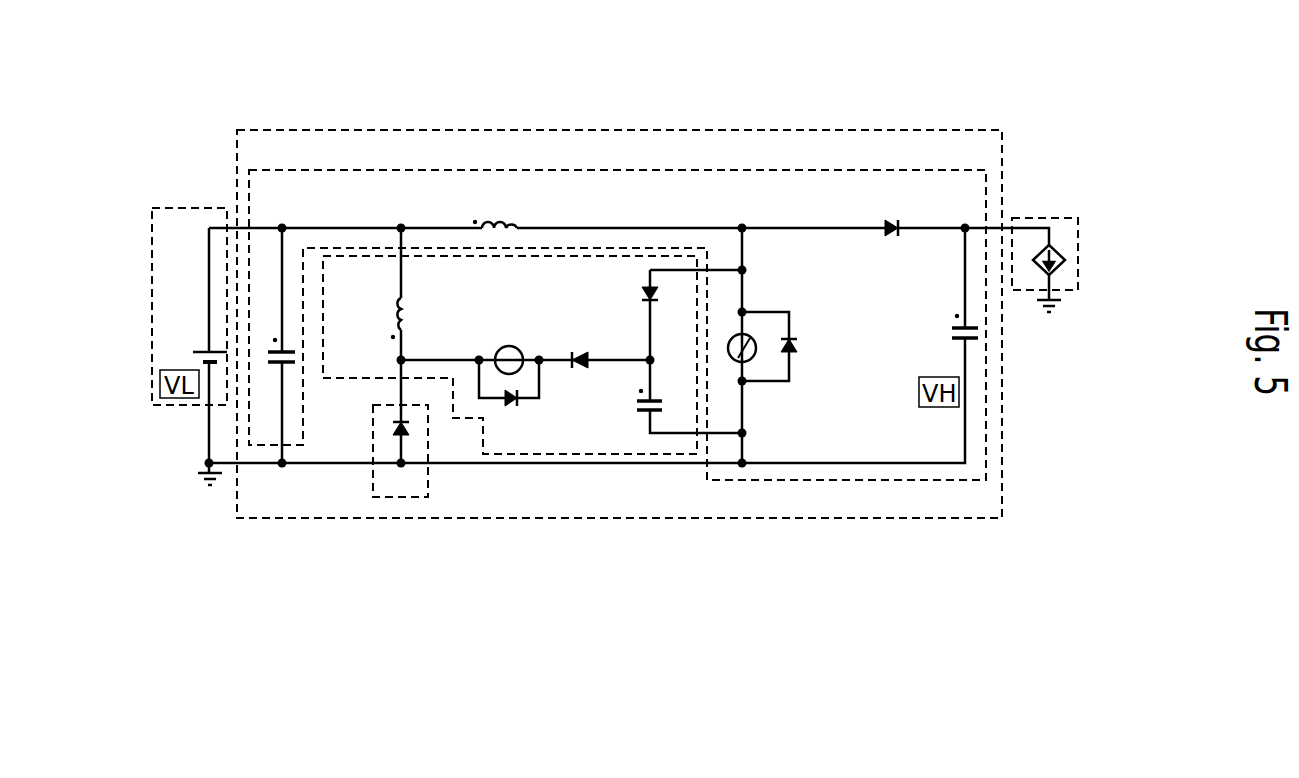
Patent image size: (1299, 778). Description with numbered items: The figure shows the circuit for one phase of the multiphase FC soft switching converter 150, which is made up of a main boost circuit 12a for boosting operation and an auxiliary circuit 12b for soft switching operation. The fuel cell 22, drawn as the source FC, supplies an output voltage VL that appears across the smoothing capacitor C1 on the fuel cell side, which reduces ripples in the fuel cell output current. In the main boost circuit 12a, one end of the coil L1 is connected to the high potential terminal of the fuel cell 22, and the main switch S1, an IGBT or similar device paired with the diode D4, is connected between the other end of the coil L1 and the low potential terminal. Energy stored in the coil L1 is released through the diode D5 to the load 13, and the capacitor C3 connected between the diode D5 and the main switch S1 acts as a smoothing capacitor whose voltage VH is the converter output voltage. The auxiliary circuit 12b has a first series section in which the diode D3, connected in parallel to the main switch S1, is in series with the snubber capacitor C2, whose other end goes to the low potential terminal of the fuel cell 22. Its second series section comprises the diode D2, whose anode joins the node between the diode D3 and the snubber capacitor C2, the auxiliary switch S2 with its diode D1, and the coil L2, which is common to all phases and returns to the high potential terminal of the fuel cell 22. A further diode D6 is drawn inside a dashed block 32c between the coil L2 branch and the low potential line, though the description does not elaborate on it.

The FC soft switching converter 150 is at (866, 130).
The main boost circuit 12a is at (781, 170).
The auxiliary circuit 12b is at (535, 456).
The fuel cell 22 is at (196, 207).
The load 13 is at (1030, 218).
The diode unit 32c is at (403, 500).
The fuel cell FC is at (191, 353).
The coil L1 is at (512, 220).
The coil L2 is at (398, 297).
The main switch S1 is at (744, 362).
The auxiliary switch S2 is at (510, 346).
The diode D1 is at (512, 400).
The diode D2 is at (580, 352).
The diode D3 is at (652, 302).
The diode D4 is at (790, 338).
The diode D5 is at (899, 226).
The sixth diode D6 is at (405, 440).
The smoothing capacitor C1 is at (287, 362).
The snubber capacitor C2 is at (640, 411).
The capacitor C3 is at (955, 340).